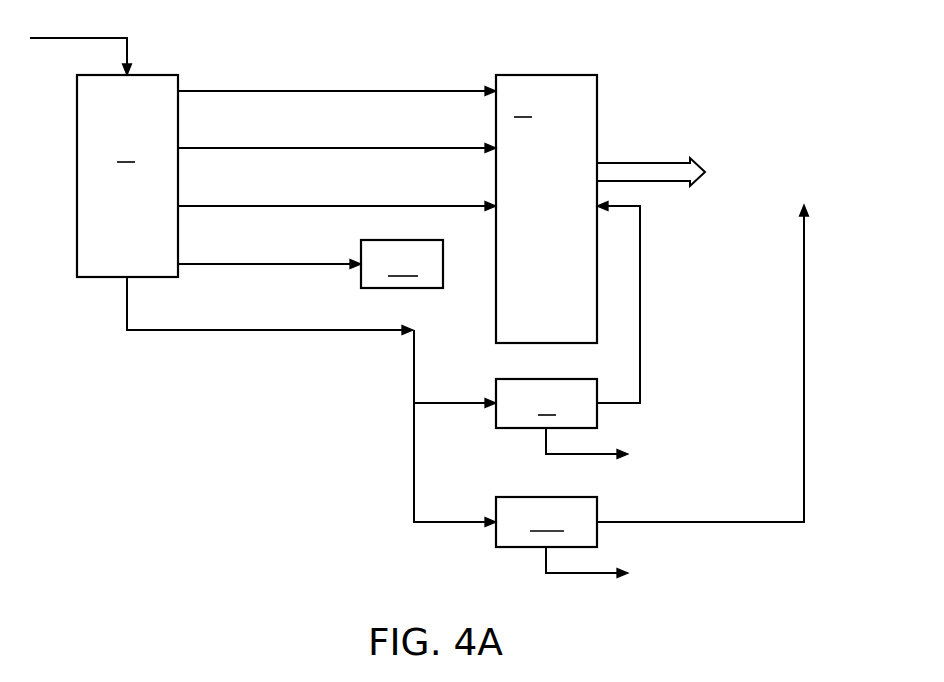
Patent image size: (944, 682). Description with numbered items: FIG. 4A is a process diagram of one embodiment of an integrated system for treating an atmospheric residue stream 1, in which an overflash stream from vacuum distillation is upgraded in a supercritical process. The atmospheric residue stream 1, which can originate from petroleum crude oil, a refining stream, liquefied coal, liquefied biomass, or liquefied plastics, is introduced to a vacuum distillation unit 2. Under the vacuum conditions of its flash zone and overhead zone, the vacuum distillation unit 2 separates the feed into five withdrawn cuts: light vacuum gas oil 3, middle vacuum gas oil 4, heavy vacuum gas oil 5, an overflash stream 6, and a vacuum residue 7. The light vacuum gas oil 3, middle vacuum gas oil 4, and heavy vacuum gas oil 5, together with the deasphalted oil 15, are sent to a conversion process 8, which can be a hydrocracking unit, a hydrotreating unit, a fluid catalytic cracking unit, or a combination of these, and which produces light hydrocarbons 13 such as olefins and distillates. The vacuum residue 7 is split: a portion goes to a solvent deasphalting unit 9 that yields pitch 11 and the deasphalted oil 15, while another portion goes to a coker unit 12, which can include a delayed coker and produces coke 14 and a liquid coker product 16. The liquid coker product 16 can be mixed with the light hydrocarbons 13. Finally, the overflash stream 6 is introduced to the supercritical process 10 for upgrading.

The atmospheric residue stream 1 is at (93, 38).
The vacuum distillation unit 2 is at (127, 176).
The light vacuum gas oil 3 is at (282, 91).
The middle vacuum gas oil 4 is at (282, 148).
The heavy vacuum gas oil 5 is at (282, 206).
The overflash stream 6 is at (282, 264).
The vacuum residue 7 is at (282, 330).
The conversion process 8 is at (546, 209).
The solvent deasphalting unit 9 is at (546, 403).
The supercritical process 10 is at (402, 264).
The pitch 11 is at (603, 454).
The coker unit 12 is at (546, 522).
The light hydrocarbons 13 is at (640, 163).
The coke 14 is at (603, 573).
The deasphalted oil 15 is at (641, 302).
The liquid coker product 16 is at (804, 303).